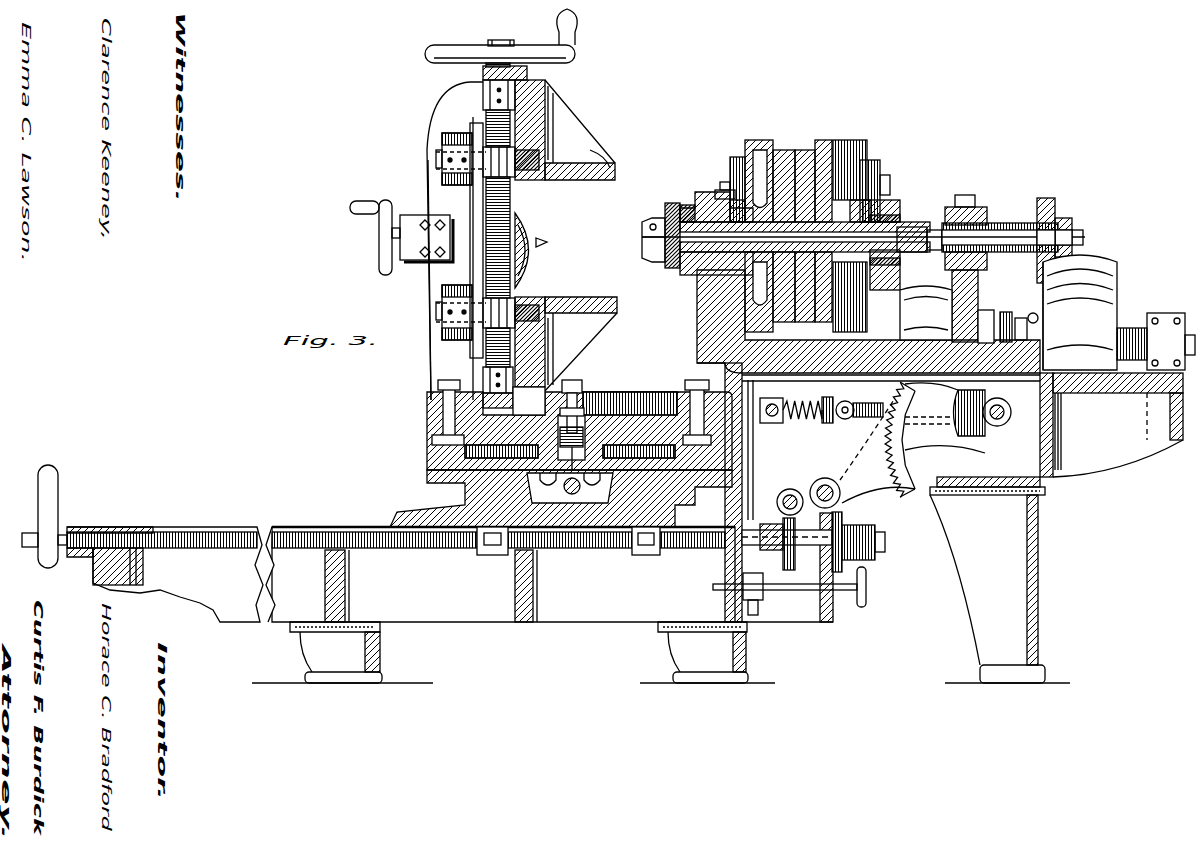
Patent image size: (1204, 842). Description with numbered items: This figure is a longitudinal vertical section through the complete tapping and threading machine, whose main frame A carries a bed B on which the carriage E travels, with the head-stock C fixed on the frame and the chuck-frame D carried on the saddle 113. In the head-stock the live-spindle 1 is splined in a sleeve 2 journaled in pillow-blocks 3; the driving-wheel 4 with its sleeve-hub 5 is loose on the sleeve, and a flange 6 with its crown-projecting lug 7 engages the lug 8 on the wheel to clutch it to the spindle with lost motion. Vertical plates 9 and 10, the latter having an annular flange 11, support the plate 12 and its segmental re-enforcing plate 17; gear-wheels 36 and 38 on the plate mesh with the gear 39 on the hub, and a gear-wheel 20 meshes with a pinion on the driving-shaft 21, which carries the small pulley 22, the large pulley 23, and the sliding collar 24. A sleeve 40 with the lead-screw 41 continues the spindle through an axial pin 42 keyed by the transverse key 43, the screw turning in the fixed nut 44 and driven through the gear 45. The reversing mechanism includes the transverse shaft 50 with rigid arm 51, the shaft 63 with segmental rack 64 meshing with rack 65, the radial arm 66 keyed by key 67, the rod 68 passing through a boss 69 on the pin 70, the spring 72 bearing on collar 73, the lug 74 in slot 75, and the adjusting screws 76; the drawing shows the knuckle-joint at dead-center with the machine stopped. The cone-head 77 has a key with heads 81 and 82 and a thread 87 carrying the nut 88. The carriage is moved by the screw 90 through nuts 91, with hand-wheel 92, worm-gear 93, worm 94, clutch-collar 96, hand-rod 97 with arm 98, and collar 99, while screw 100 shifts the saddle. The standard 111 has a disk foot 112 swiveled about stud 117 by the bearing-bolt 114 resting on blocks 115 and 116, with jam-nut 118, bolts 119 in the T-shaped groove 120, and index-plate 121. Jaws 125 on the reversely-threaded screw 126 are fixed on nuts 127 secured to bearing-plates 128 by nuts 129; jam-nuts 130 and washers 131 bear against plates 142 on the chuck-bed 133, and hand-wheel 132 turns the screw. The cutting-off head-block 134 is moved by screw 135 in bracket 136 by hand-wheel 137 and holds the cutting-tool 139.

The live-spindle 1 is at (905, 228).
The sleeve 2 is at (682, 210).
The pillow-blocks 3 is at (900, 260).
The driving-wheel 4 is at (723, 178).
The sleeve-hub 5 is at (884, 175).
The radially-projecting flange 6 is at (720, 186).
The crown-projecting lug 7 is at (705, 284).
The lug 8 is at (690, 287).
The vertical plate 9 is at (824, 140).
The vertical plate 10 is at (760, 140).
The annular flange 11 is at (790, 150).
The plate 12 is at (805, 150).
The segmental re-enforcing plate 17 is at (732, 180).
The gear-wheel 20 is at (850, 140).
The driving-shaft 21 is at (1195, 345).
The small pulley 22 is at (926, 313).
The large pulley 23 is at (1080, 312).
The sliding collar 24 is at (986, 310).
The gear-wheel 36 is at (872, 162).
The gear-wheel 38 is at (900, 270).
The gear 39 is at (885, 200).
The sleeve 40 is at (1030, 223).
The lead-screw 41 is at (995, 223).
The axial pin 42 is at (1083, 236).
The transverse key 43 is at (936, 230).
The fixed nut 44 is at (980, 207).
The gear 45 is at (1052, 200).
The transverse shaft 50 is at (1053, 413).
The rigid arm 51 is at (1012, 372).
The shaft 63 is at (817, 482).
The segmental rack 64 is at (877, 442).
The segmental rack 65 is at (908, 430).
The radial arm 66 is at (868, 403).
The key 67 is at (992, 427).
The rod 68 is at (845, 401).
The boss 69 is at (779, 434).
The pin 70 is at (772, 424).
The spring 72 is at (808, 421).
The collar 73 is at (825, 400).
The lug 74 is at (927, 408).
The segmental slot 75 is at (927, 422).
The screws 76 is at (901, 381).
The cone-head 77 is at (642, 240).
The enlarged head 81 is at (648, 214).
The exterior-faced head 82 is at (643, 226).
The peripheral screw-thread 87 is at (653, 224).
The nut 88 is at (676, 205).
The screw 90 is at (450, 548).
The nuts 91 is at (492, 555).
The cranked hand-wheel 92 is at (50, 503).
The worm-gear 93 is at (789, 571).
The worm 94 is at (777, 500).
The clutch-collar 96 is at (740, 540).
The sliding hand-rod 97 is at (866, 587).
The arm 98 is at (726, 576).
The loose collar 99 is at (846, 525).
The screw 100 is at (580, 487).
The standard 111 is at (435, 293).
The disk foot 112 is at (561, 428).
The saddle 113 is at (560, 492).
The bearing-bolt 114 is at (585, 435).
The friction-blocks 115 is at (583, 420).
The block 116 is at (605, 428).
The stud 117 is at (570, 478).
The jam-nut 118 is at (586, 402).
The bolts 119 is at (440, 398).
The T-shaped groove 120 is at (432, 440).
The annular index-plate 121 is at (547, 530).
The movable jaws 125 is at (584, 154).
The reversely-threaded screw 126 is at (497, 40).
The nuts 127 is at (512, 174).
The bearing-plates 128 is at (475, 216).
The nuts 129 is at (458, 133).
The jam-nuts 130 is at (550, 100).
The washers 131 is at (515, 80).
The cranked hand-wheel 132 is at (426, 49).
The vertical chuck-bed 133 is at (540, 170).
The head-block 134 is at (530, 232).
The screw 135 is at (388, 210).
The bracket 136 is at (412, 222).
The cranked hand-wheel 137 is at (381, 237).
The cutting-tool 139 is at (547, 242).
The plates 142 is at (483, 76).
The main frame A is at (1030, 550).
The bed B is at (420, 590).
The head-stock C is at (712, 310).
The chuck-frame D is at (437, 345).
The carriage E is at (400, 505).